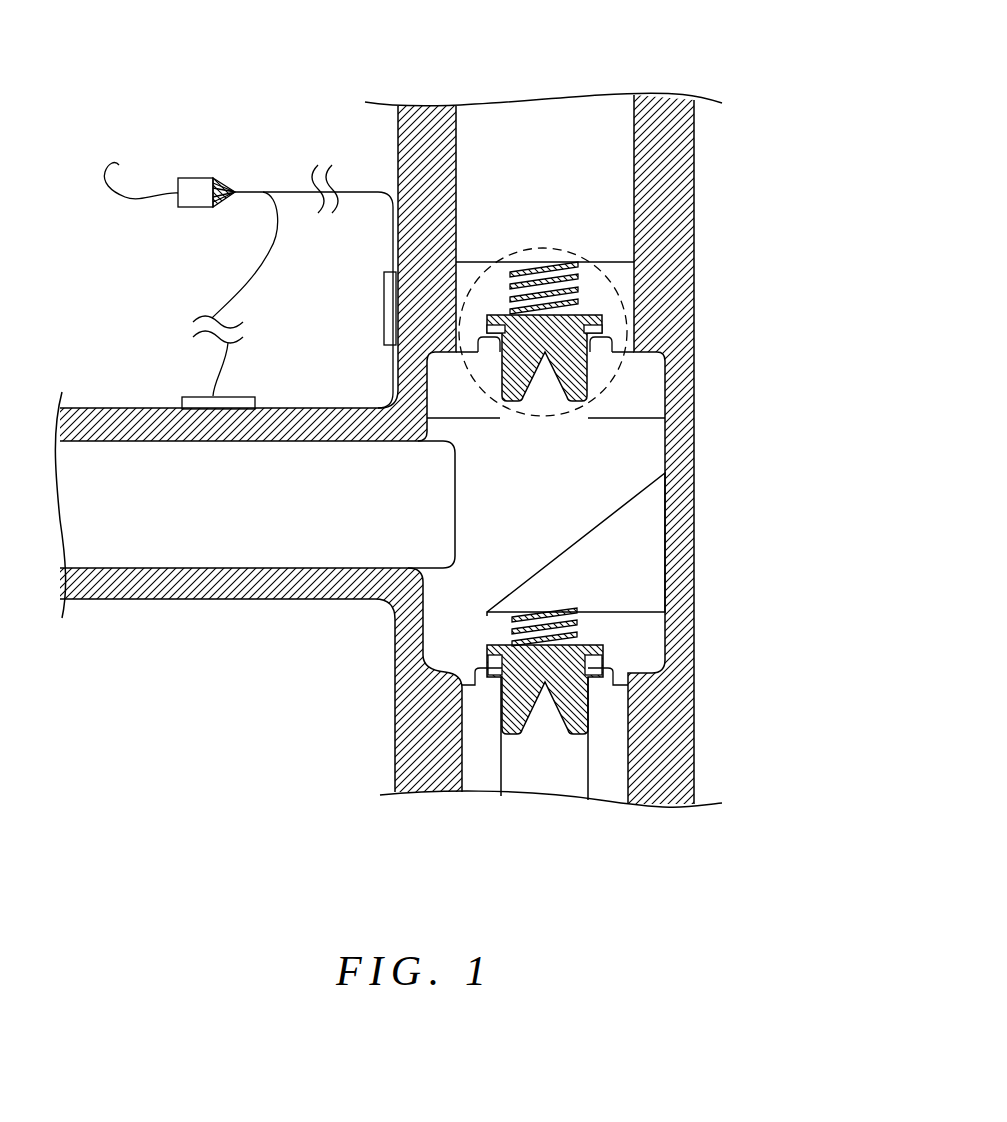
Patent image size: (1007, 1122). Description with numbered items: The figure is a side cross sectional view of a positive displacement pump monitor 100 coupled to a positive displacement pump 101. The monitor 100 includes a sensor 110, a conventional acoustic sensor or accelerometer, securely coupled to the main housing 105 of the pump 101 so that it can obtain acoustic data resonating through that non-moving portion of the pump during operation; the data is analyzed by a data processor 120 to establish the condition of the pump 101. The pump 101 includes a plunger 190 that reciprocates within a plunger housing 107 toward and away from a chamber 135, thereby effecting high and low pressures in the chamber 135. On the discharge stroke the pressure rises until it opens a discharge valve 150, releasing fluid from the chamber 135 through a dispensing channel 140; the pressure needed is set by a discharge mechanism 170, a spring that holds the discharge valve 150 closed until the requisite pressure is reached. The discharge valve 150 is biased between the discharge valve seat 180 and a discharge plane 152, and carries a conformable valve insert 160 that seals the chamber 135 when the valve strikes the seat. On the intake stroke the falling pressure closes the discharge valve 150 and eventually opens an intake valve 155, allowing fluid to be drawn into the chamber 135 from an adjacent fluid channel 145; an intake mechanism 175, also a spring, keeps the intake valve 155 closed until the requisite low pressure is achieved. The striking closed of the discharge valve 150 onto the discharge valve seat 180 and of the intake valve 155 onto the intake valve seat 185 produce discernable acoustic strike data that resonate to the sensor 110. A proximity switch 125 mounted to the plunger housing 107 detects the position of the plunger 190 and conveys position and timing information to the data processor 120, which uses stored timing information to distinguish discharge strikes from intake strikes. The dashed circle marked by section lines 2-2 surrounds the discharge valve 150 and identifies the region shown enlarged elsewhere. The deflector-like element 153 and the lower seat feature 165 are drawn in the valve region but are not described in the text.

The positive displacement pump monitor 100 is at (150, 283).
The positive displacement pump 101 is at (812, 470).
The main housing 105 is at (402, 160).
The plunger housing 107 is at (292, 412).
The sensor 110 is at (387, 307).
The data processor 120 is at (203, 178).
The proximity switch 125 is at (197, 398).
The chamber 135 is at (598, 473).
The dispensing channel 140 is at (473, 262).
The fluid channel 145 is at (553, 770).
The discharge valve 150 is at (582, 377).
The discharge plane 152 is at (590, 182).
The deflector 153 is at (633, 548).
The intake valve 155 is at (603, 648).
The valve insert 160 is at (590, 318).
The lower valve seat 165 is at (500, 667).
The discharge mechanism 170 is at (585, 277).
The intake mechanism 175 is at (497, 627).
The discharge valve seat 180 is at (650, 401).
The intake valve seat 185 is at (603, 757).
The plunger 190 is at (157, 548).
The section lines 2-2 is at (545, 416).